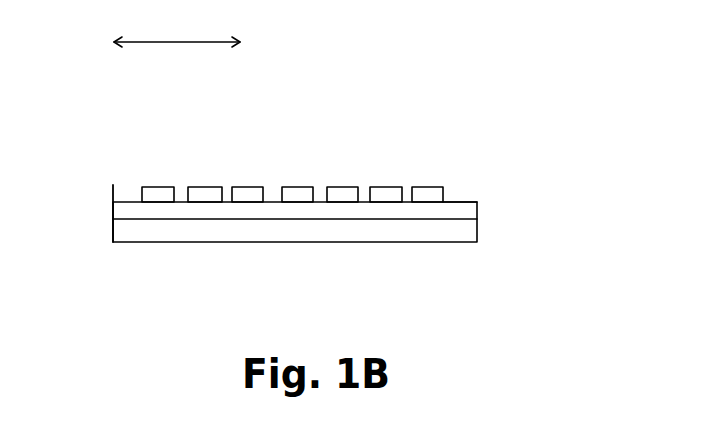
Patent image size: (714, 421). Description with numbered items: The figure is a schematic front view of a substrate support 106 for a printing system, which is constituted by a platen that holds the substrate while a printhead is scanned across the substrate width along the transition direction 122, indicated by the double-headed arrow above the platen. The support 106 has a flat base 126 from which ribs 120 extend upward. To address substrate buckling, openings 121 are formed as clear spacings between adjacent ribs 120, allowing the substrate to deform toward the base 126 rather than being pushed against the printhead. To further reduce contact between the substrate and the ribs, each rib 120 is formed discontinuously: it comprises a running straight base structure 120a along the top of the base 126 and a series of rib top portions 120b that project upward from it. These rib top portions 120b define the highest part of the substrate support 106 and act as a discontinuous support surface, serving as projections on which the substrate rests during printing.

The substrate support 106 is at (497, 173).
The ribs 120 is at (135, 185).
The running straight base structure 120a is at (462, 205).
The rib top portions 120b is at (247, 187).
The openings 121 is at (407, 187).
The transition direction 122 is at (200, 42).
The base 126 is at (327, 228).